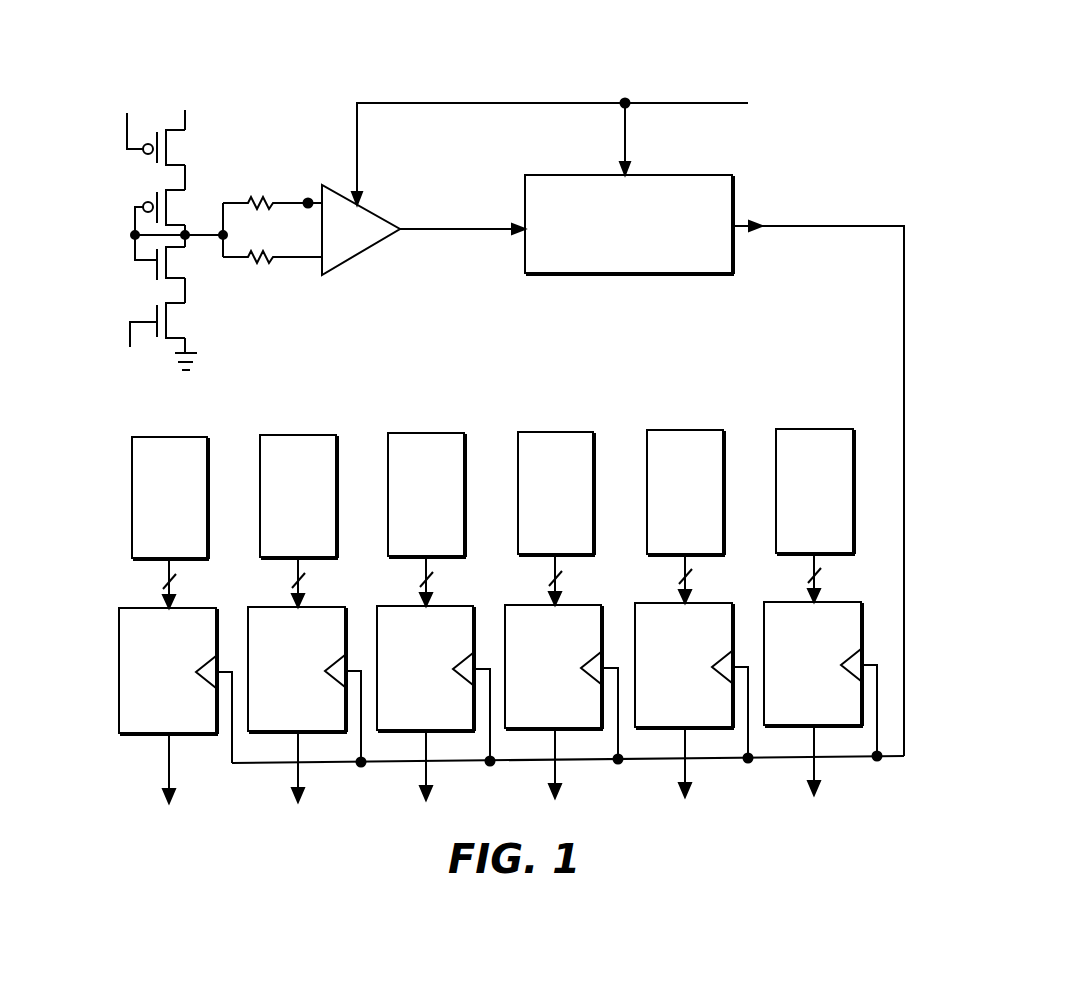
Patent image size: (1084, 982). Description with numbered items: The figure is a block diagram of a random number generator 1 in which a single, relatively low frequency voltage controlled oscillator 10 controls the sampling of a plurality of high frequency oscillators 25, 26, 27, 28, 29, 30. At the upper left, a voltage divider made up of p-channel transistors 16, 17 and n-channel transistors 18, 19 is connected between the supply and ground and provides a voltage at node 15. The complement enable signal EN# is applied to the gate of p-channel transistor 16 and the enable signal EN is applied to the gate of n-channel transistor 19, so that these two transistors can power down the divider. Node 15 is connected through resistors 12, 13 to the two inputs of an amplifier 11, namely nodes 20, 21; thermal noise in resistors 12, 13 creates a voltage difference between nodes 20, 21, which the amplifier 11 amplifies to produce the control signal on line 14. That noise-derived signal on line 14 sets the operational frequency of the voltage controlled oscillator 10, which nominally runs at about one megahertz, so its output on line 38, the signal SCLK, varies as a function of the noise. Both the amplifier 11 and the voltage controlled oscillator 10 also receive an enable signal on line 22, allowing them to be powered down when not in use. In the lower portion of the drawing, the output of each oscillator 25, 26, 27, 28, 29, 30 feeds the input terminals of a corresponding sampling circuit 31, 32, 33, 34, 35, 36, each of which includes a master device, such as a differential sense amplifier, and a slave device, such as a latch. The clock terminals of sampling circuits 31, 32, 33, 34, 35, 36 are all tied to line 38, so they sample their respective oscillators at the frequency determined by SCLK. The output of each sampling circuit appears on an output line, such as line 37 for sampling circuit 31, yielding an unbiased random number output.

The random number generator 1 is at (359, 33).
The voltage controlled oscillator 10 is at (640, 274).
The amplifier 11 is at (358, 258).
The resistor 12 is at (273, 257).
The resistor 13 is at (273, 203).
The line 14 is at (448, 232).
The node 15 is at (180, 233).
The p-channel transistor 16 is at (177, 151).
The p-channel transistor 17 is at (177, 208).
The n-channel transistor 18 is at (177, 259).
The n-channel transistor 19 is at (178, 326).
The node 20 is at (309, 201).
The node 21 is at (303, 258).
The line 22 is at (538, 103).
The oscillator 25 is at (195, 437).
The oscillator 26 is at (324, 435).
The oscillator 27 is at (452, 433).
The oscillator 28 is at (581, 432).
The oscillator 29 is at (711, 430).
The oscillator 30 is at (841, 429).
The sampling circuit 31 is at (210, 608).
The sampling circuit 32 is at (340, 607).
The sampling circuit 33 is at (468, 606).
The sampling circuit 34 is at (596, 605).
The sampling circuit 35 is at (727, 603).
The sampling circuit 36 is at (856, 602).
The output line 37 is at (169, 777).
The line 38 is at (904, 393).